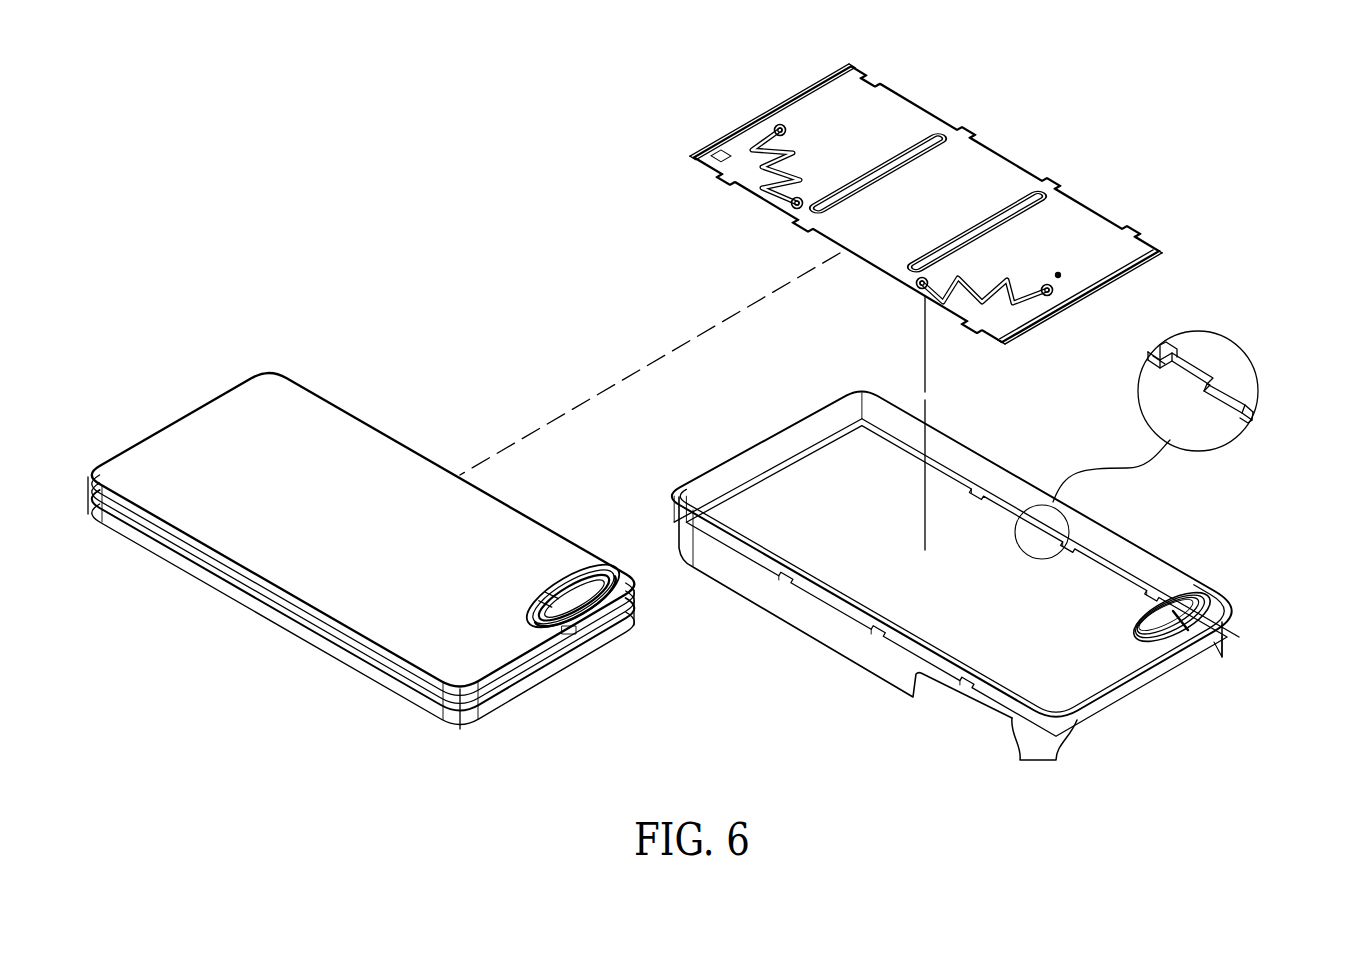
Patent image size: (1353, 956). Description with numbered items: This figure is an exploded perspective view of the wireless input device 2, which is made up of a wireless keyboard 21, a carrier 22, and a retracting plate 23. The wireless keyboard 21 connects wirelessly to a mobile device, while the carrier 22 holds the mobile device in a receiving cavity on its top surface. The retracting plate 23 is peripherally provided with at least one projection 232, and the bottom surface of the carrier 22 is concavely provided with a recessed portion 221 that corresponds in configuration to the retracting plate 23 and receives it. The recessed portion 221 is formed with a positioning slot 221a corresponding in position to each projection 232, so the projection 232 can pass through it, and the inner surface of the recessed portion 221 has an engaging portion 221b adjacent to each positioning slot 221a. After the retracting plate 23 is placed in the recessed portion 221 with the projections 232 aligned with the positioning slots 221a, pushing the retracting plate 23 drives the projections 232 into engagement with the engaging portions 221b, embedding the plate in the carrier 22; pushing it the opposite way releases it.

The wireless input device 2 is at (266, 131).
The wireless keyboard 21 is at (303, 580).
The carrier 22 is at (1120, 668).
The recessed portion 221 is at (996, 640).
The positioning slot 221a is at (1190, 366).
The engaging portion 221b is at (1251, 414).
The retracting plate 23 is at (750, 110).
The projection 232 is at (1055, 182).